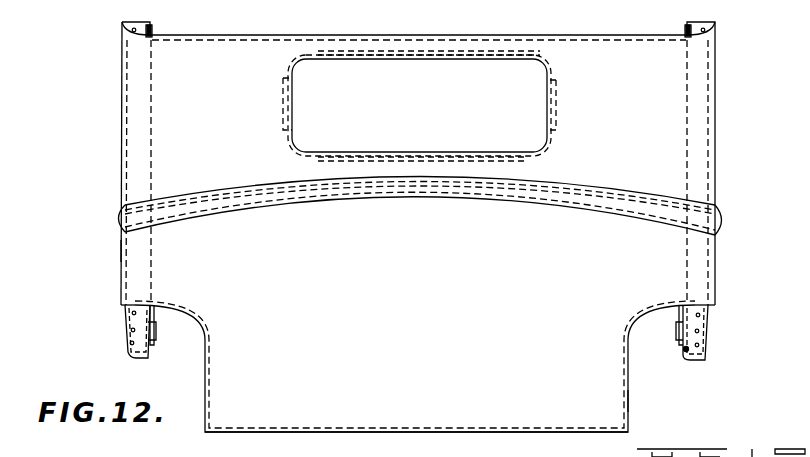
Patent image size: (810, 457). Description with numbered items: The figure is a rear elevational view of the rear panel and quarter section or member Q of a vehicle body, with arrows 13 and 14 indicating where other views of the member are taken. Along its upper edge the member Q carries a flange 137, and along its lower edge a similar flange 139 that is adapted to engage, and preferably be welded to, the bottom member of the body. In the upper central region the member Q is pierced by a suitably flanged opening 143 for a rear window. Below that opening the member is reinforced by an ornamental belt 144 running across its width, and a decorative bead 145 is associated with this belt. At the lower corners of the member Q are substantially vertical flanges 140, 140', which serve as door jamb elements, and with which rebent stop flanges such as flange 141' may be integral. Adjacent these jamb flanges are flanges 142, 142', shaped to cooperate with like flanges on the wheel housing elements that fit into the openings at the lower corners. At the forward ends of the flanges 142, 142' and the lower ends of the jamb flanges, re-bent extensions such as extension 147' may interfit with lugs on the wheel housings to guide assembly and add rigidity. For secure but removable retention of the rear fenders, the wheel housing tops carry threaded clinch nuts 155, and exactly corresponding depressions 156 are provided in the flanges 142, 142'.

The rear panel and quarter section Q is at (670, 102).
The flange 137 is at (185, 22).
The flanged opening 143 is at (522, 80).
The decorative bead 145 is at (583, 178).
The ornamental belt 144 is at (553, 196).
The flange 142 is at (105, 331).
The flange 142' is at (730, 332).
The clinch nuts 155 is at (128, 313).
The depressions 156 is at (705, 318).
The rebent flange 141' is at (174, 325).
The vertical flange 140 is at (172, 339).
The vertical flange 140' is at (659, 340).
The re-bent extension 147' is at (668, 364).
The flange 139 is at (290, 432).
The section arrow 13 is at (114, 250).
The section arrow 14 is at (617, 400).